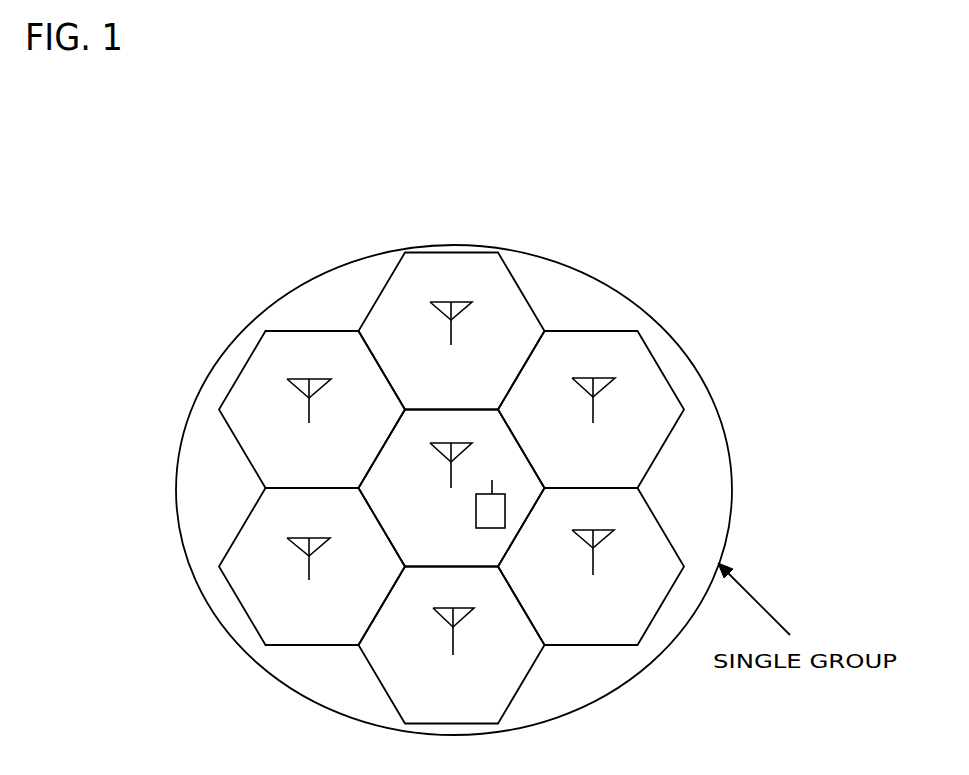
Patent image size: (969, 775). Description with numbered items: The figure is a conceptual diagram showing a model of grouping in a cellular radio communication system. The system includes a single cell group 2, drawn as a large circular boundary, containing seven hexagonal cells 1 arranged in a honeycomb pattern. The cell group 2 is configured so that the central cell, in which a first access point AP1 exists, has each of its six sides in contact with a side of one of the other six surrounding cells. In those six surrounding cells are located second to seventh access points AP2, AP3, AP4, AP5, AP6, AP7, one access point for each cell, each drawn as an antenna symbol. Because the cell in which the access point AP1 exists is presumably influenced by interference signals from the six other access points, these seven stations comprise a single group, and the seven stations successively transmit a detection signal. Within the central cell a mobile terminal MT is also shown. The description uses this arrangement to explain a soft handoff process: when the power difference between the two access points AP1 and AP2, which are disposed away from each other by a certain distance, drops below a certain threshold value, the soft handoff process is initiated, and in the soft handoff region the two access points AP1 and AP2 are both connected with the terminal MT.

The hexagonal cell 1 is at (623, 332).
The cell group 2 is at (717, 410).
The first access point AP1 is at (432, 445).
The second access point AP2 is at (452, 331).
The third access point AP3 is at (591, 414).
The fourth access point AP4 is at (591, 566).
The fifth access point AP5 is at (452, 645).
The sixth access point AP6 is at (312, 566).
The seventh access point AP7 is at (312, 409).
The mobile terminal MT is at (476, 503).